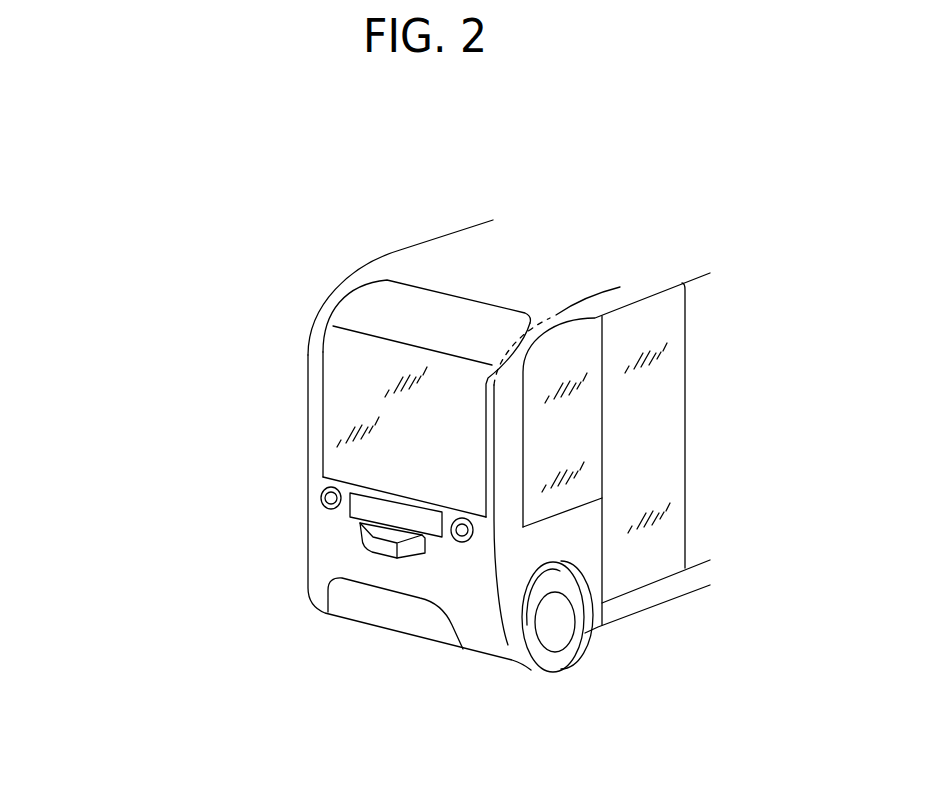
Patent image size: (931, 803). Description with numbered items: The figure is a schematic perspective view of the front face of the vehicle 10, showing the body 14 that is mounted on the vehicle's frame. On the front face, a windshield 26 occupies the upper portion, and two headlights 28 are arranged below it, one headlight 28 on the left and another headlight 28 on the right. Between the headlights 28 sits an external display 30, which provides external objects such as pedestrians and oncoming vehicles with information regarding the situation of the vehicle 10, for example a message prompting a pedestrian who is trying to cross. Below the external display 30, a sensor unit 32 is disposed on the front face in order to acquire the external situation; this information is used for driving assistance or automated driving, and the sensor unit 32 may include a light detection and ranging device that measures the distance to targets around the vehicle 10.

The vehicle 10 is at (482, 208).
The body 14 is at (430, 263).
The windshield 26 is at (355, 382).
The headlight 28 is at (320, 497).
The external display 30 is at (365, 510).
The sensor unit 32 is at (385, 552).